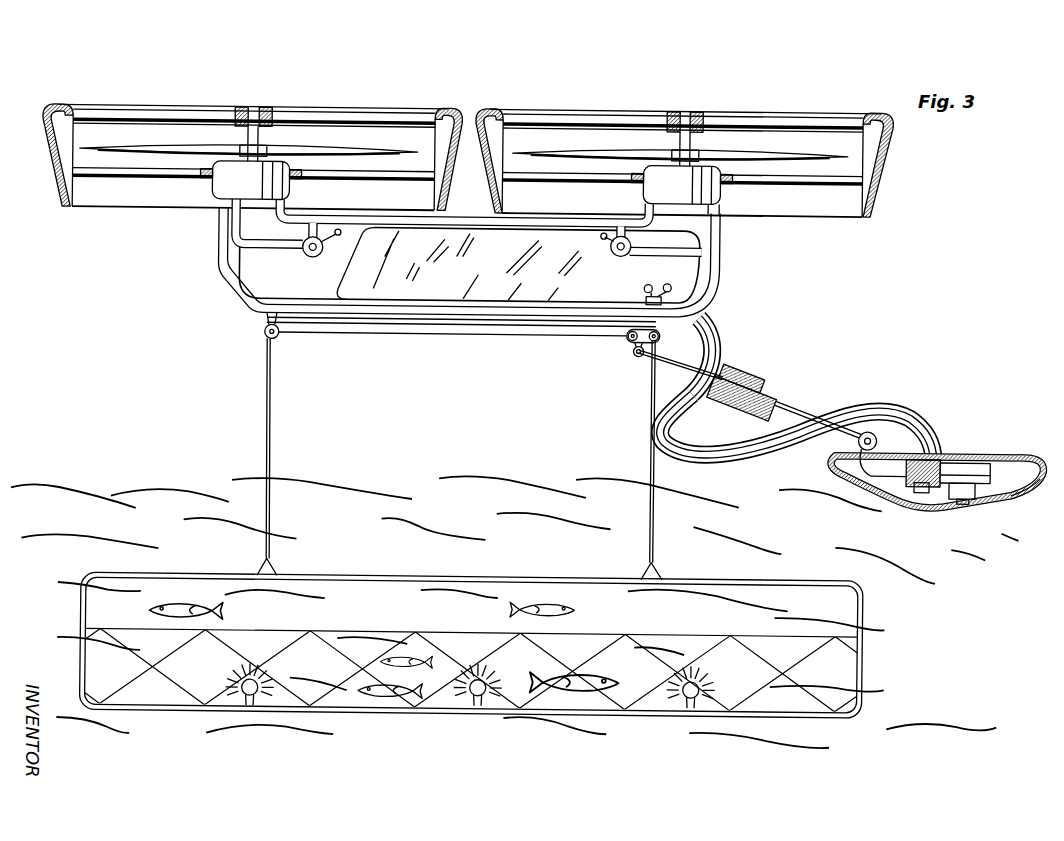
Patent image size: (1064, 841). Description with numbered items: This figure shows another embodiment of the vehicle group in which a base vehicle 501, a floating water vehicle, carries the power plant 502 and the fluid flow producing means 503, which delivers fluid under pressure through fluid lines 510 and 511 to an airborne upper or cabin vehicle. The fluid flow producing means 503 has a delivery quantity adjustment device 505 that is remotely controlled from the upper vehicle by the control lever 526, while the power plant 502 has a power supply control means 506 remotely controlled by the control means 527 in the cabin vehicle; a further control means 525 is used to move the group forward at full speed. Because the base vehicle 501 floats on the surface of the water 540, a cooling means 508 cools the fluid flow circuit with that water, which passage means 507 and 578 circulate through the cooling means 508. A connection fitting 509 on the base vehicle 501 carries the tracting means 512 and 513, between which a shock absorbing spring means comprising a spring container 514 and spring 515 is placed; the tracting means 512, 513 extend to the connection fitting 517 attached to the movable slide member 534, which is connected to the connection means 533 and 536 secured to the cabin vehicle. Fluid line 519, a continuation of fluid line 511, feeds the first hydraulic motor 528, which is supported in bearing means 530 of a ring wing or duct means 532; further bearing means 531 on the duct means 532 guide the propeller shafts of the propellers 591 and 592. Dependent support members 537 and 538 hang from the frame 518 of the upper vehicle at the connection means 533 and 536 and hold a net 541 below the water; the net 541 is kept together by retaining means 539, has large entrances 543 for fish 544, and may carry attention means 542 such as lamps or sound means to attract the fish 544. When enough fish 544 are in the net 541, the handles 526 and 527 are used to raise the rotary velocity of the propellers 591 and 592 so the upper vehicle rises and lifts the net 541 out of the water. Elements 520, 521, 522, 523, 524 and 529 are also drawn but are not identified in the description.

The base vehicle 501 is at (1013, 457).
The power plant 502 is at (970, 460).
The fluid flow producing means 503 is at (923, 455).
The delivery quantity adjustment device 505 is at (921, 491).
The power supply control means 506 is at (867, 475).
The passage means 507 is at (943, 493).
The cooling means 508 is at (961, 500).
The connection fitting 509 is at (857, 441).
The fluid line 510 is at (841, 403).
The fluid line 511 is at (884, 412).
The tracting means 512 is at (826, 396).
The tracting means 513 is at (693, 346).
The spring container 514 is at (756, 364).
The spring 515 is at (763, 381).
The connection fitting 517 is at (637, 356).
The frame 518 is at (218, 263).
The fluid line 519 is at (230, 233).
The connecting pipe 520 is at (344, 220).
The conduit 521 is at (719, 230).
The valve 522 is at (306, 260).
The valve 523 is at (613, 256).
The tank 524 is at (487, 233).
The control means 525 is at (645, 297).
The control lever 526 is at (648, 283).
The control means 527 is at (670, 285).
The first hydraulic motor 528 is at (211, 189).
The motor 529 is at (719, 192).
The bearing means 530 is at (292, 182).
The bearing means 531 is at (237, 120).
The ring wing or duct means 532 is at (78, 97).
The connection means 533 is at (279, 341).
The movable slide member 534 is at (532, 337).
The connection means 536 is at (690, 325).
The dependent support member 537 is at (272, 445).
The dependent support member 538 is at (651, 459).
The retaining means 539 is at (341, 576).
The water 540 is at (153, 498).
The net 541 is at (784, 665).
The attention means 542 is at (252, 675).
The entrances 543 is at (325, 614).
The fish 544 is at (202, 610).
The passage means 578 is at (1003, 492).
The propeller 591 is at (321, 150).
The propeller 592 is at (752, 152).